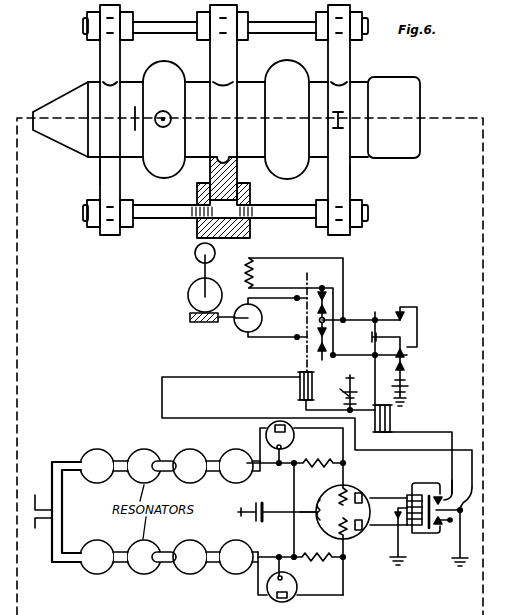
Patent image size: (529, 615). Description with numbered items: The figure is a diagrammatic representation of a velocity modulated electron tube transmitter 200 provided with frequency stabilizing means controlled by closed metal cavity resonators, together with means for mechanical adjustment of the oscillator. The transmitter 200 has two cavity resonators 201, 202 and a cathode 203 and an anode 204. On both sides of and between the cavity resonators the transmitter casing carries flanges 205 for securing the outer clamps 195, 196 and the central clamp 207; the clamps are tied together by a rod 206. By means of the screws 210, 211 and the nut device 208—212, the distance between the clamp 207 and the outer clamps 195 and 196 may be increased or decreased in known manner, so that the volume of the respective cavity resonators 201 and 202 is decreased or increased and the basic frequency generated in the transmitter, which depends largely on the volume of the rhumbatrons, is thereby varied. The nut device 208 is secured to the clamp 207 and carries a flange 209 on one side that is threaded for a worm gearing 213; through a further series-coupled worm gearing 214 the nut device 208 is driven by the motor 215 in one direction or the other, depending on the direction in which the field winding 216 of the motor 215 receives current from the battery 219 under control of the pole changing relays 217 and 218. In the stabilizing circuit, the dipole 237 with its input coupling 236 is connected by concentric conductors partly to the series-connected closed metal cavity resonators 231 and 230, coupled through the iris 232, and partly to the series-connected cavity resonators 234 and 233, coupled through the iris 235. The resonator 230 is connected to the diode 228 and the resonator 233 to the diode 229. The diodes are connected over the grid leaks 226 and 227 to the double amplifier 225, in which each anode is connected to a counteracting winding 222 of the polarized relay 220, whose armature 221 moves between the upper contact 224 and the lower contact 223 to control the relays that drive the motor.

The outer clamp 195 is at (350, 180).
The outer clamp 196 is at (100, 171).
The transmitter 200 is at (60, 119).
The cavity resonator 201 is at (287, 110).
The cavity resonator 202 is at (164, 111).
The cathode 203 is at (335, 130).
The anode 204 is at (137, 116).
The flanges 205 is at (112, 80).
The tie rod 206 is at (282, 22).
The clamp 207 is at (224, 166).
The nut device 208 is at (197, 191).
The flange 209 is at (210, 185).
The screw 210 is at (186, 210).
The screw 211 is at (278, 212).
The nut device part 212 is at (241, 183).
The worm gearing 213 is at (218, 250).
The worm gearing 214 is at (190, 300).
The motor 215 is at (239, 330).
The field winding 216 is at (253, 272).
The pole changing relay 217 is at (300, 390).
The pole changing relay 218 is at (390, 420).
The battery 219 is at (345, 385).
The polarized relay 220 is at (416, 484).
The armature 221 is at (462, 507).
The relay winding 222 is at (425, 532).
The lower contact 223 is at (452, 521).
The upper contact 224 is at (464, 486).
The double amplifier 225 is at (333, 487).
The grid leak 226 is at (291, 485).
The grid leak 227 is at (301, 567).
The diode 228 is at (267, 427).
The diode 229 is at (267, 588).
The cavity resonator 230 is at (212, 470).
The cavity resonator 231 is at (117, 467).
The resonator iris 232 is at (157, 461).
The cavity resonator 233 is at (212, 547).
The cavity resonator 234 is at (117, 554).
The resonator iris 235 is at (165, 552).
The input coupling 236 is at (50, 530).
The dipole 237 is at (50, 512).